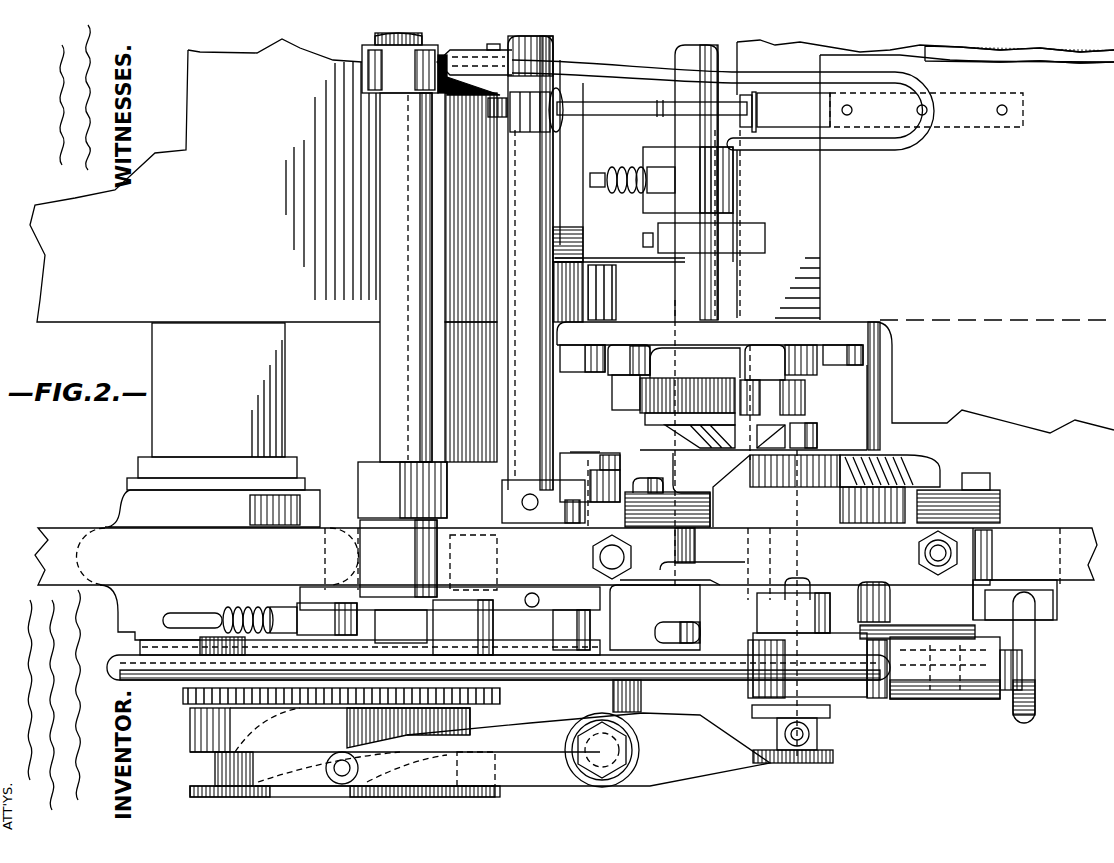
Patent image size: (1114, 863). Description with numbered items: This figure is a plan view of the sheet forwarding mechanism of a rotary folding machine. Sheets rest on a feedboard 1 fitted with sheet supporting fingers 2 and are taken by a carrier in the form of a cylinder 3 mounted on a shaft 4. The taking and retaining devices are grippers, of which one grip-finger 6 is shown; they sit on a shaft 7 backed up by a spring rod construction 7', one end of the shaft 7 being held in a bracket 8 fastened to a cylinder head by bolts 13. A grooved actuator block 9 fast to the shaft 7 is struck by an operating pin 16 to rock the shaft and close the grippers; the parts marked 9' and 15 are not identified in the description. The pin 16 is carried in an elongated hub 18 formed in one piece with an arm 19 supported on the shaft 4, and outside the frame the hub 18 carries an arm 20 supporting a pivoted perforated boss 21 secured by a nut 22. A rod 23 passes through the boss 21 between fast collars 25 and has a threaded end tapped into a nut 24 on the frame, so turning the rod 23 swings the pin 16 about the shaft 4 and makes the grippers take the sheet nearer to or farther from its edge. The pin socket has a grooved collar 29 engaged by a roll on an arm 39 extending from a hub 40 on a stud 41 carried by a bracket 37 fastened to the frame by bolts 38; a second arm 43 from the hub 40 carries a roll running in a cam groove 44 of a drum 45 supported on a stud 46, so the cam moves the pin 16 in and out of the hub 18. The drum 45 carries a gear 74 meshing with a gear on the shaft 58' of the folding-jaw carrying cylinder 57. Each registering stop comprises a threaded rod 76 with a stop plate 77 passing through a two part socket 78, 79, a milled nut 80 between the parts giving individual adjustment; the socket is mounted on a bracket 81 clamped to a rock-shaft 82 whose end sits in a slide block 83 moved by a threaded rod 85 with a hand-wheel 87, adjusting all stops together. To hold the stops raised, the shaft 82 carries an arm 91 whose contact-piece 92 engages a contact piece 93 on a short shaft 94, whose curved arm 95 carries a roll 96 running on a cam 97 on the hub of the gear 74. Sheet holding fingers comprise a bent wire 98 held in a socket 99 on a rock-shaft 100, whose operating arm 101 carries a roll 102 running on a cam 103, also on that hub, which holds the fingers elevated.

The feedboard 1 is at (820, 212).
The sheet supporting fingers 2 is at (890, 110).
The cylinder 3 is at (925, 179).
The shaft 4 is at (980, 386).
The grip-finger 6 is at (704, 238).
The shaft 7 is at (651, 201).
The spring rod construction 7' is at (661, 183).
The bracket 8 is at (716, 333).
The grooved block 9 is at (753, 436).
The wedge guide 9' is at (617, 392).
The bolts 13 is at (590, 355).
The gear 15 is at (672, 390).
The operating pin 16 is at (818, 437).
The elongated hub 18 is at (765, 542).
The arm 19 is at (812, 490).
The arm 20 is at (866, 610).
The pivoted perforated boss 21 is at (835, 680).
The nut 22 is at (797, 578).
The rod 23 is at (498, 667).
The nut 24 is at (940, 699).
The collars 25 is at (757, 685).
The grooved collar 29 is at (834, 757).
The bracket 37 is at (642, 697).
The bolts 38 is at (667, 630).
The arm 39 is at (637, 750).
The hub 40 is at (634, 758).
The stud 41 is at (620, 745).
The arm 43 is at (480, 747).
The cam groove 44 is at (345, 774).
The drum 45 is at (190, 727).
The stud 46 is at (322, 560).
The carrying cylinder 57 is at (205, 180).
The shaft 58' is at (212, 425).
The gear 74 is at (262, 704).
The threaded rod 76 is at (696, 182).
The stop plate 77 is at (756, 96).
The socket part 78 is at (652, 110).
The socket part 79 is at (530, 133).
The milled nut 80 is at (560, 132).
The bracket 81 is at (488, 106).
The rock-shaft 82 is at (562, 263).
The slide block 83 is at (450, 598).
The threaded rod 85 is at (603, 650).
The hand-wheel 87 is at (1036, 630).
The arm 91 is at (543, 501).
The contact-piece 92 is at (621, 463).
The contact piece 93 is at (596, 462).
The short shaft 94 is at (582, 457).
The curved arm 95 is at (476, 654).
The roll 96 is at (442, 654).
The cam 97 is at (260, 629).
The bent wire 98 is at (875, 140).
The socket 99 is at (465, 62).
The rock-shaft 100 is at (429, 315).
The operating arm 101 is at (469, 562).
The roll 102 is at (463, 627).
The cam 103 is at (401, 626).